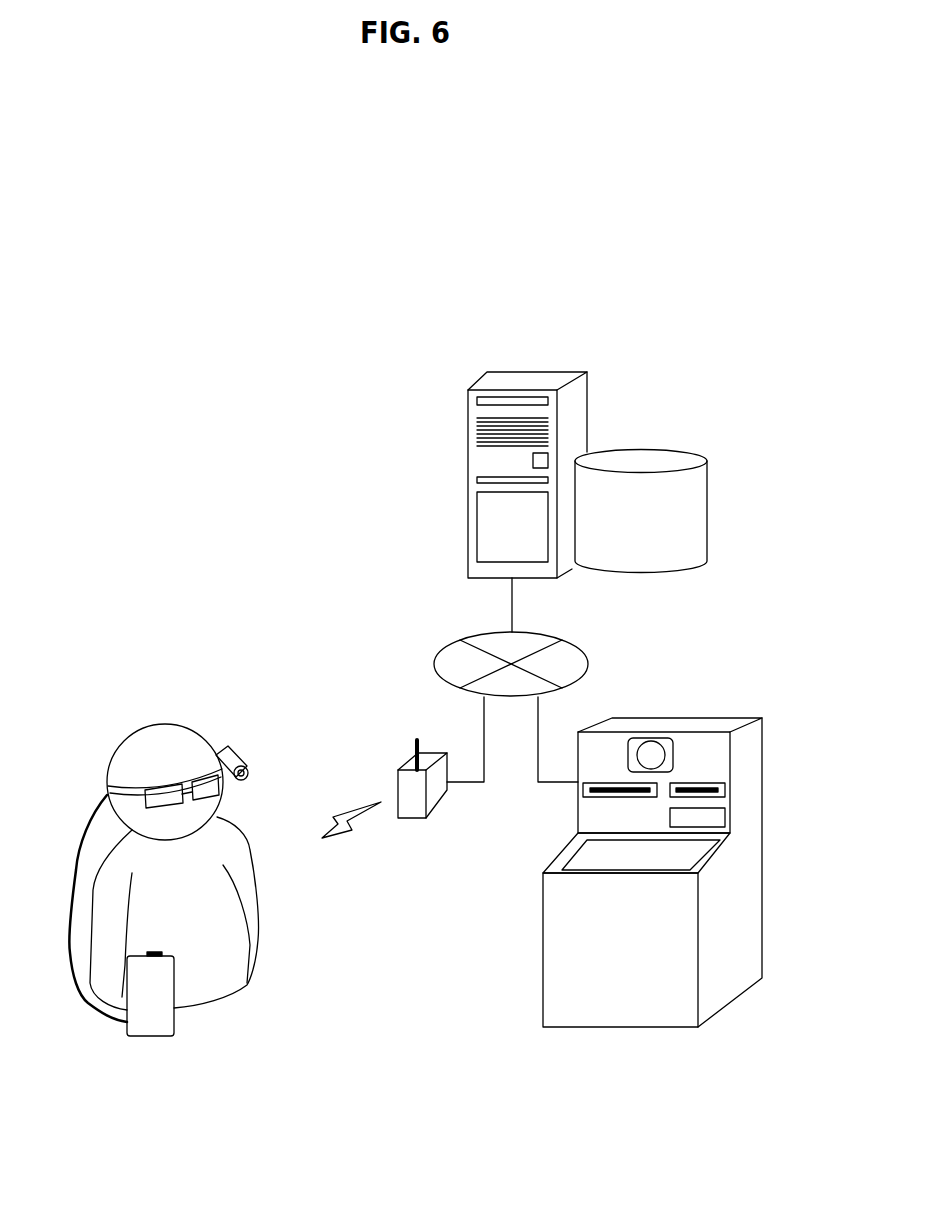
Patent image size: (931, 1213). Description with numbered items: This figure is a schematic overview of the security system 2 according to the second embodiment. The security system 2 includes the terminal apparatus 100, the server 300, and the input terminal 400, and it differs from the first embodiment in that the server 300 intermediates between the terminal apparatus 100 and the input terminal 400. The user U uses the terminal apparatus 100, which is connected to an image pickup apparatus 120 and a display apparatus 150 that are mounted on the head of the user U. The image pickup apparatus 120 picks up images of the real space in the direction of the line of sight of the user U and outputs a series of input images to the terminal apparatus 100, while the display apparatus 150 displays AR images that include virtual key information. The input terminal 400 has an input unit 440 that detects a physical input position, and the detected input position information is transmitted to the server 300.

The security system 2 is at (97, 427).
The terminal apparatus 100 is at (157, 1018).
The image pickup apparatus 120 is at (238, 757).
The display apparatus 150 is at (225, 797).
The server 300 is at (537, 372).
The input terminal 400 is at (685, 857).
The input unit 440 is at (645, 855).
The user U is at (242, 870).